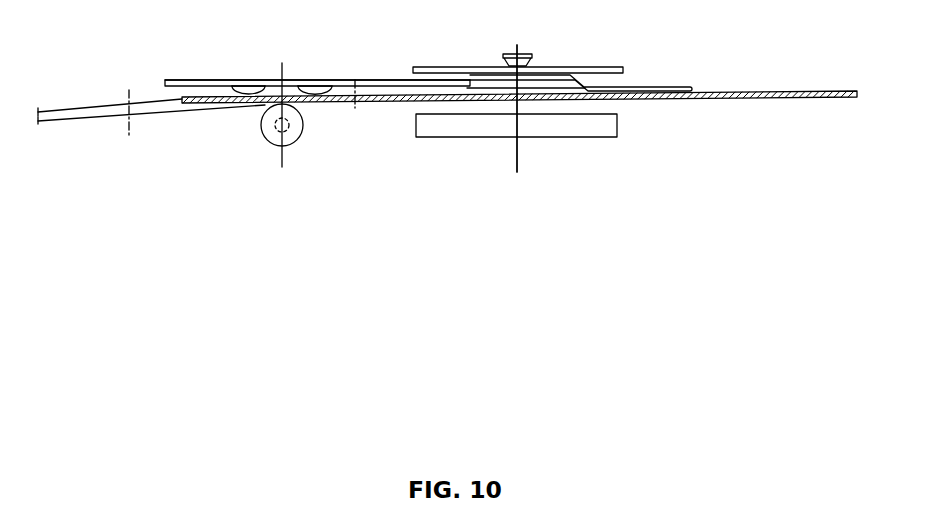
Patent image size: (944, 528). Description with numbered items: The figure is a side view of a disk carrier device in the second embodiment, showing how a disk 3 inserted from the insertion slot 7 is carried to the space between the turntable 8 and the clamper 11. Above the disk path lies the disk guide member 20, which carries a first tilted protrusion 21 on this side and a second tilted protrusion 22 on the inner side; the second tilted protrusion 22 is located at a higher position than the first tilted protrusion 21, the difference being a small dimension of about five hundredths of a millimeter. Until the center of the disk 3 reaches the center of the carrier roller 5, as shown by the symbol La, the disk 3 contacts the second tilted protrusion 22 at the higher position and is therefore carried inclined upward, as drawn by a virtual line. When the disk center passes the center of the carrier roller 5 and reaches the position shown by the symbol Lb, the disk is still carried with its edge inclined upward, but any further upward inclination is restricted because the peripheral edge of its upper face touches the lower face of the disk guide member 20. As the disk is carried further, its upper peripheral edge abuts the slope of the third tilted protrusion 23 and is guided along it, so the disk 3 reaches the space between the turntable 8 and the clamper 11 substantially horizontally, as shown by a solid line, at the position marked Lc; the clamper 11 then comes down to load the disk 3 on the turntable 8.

The disk 3 is at (148, 113).
The carrier roller 5 is at (272, 142).
The insertion slot 7 is at (263, 108).
The turntable 8 is at (572, 137).
The clamper 11 is at (570, 66).
The disk guide member 20 is at (370, 77).
The first tilted protrusion 21 is at (245, 107).
The second tilted protrusion 22 is at (320, 103).
The third tilted protrusion 23 is at (605, 88).
The position La is at (129, 128).
The position Lb is at (355, 108).
The position Lc is at (517, 148).